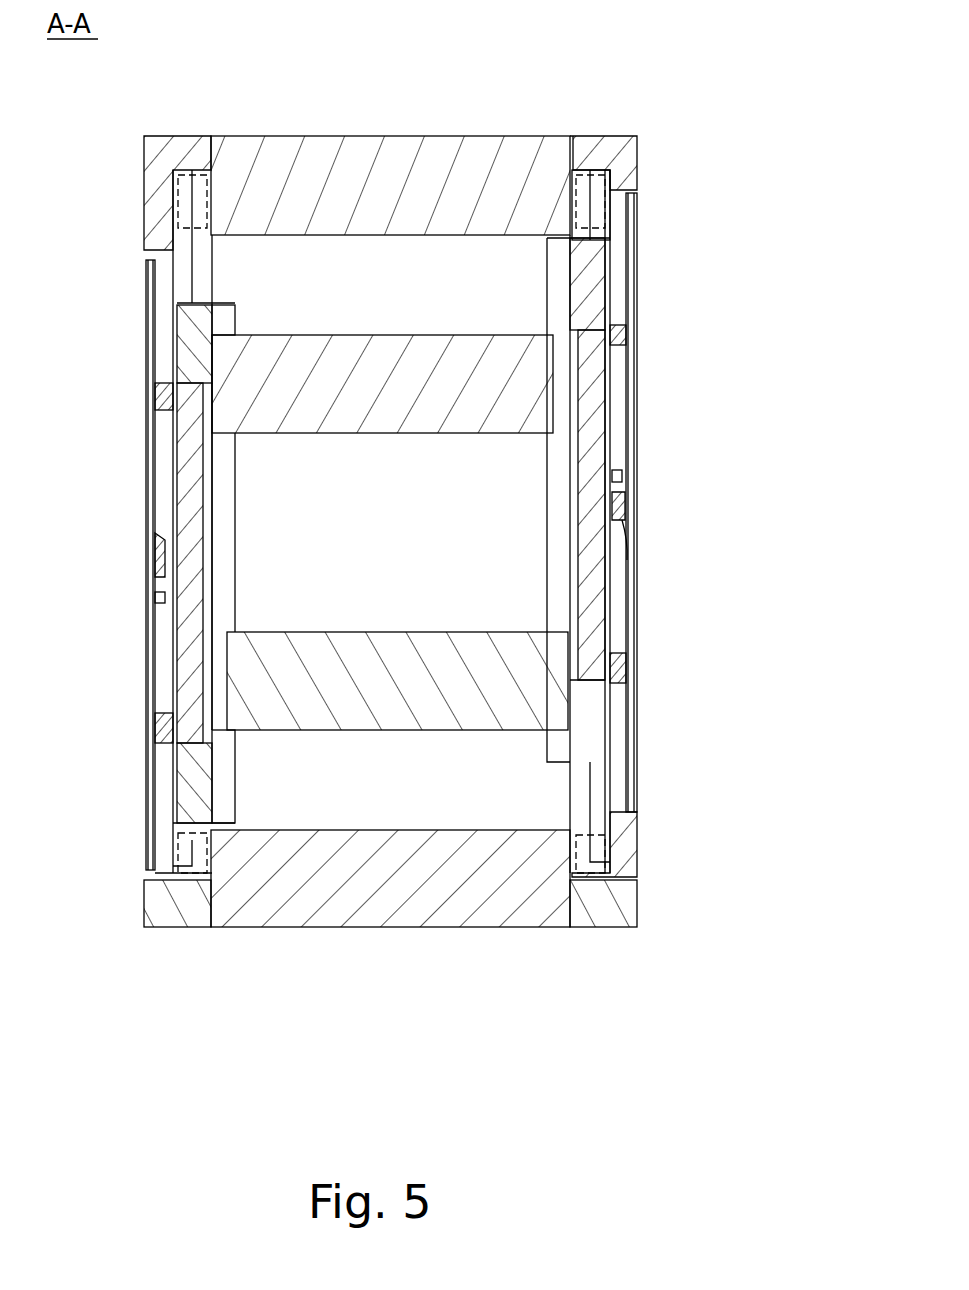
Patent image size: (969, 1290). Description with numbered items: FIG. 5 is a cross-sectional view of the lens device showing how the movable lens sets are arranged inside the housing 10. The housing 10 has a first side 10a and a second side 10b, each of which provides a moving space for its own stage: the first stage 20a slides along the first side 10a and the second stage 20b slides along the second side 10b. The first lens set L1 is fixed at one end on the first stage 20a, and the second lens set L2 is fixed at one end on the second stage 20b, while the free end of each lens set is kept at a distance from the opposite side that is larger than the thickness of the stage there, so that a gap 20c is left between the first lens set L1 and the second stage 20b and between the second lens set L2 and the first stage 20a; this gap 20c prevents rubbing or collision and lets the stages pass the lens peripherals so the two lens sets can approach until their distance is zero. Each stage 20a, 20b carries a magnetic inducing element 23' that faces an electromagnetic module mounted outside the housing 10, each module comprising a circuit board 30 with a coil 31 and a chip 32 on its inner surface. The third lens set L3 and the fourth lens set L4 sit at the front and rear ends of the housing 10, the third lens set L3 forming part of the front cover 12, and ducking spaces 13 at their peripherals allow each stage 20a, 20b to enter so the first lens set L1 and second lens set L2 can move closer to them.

The housing 10 is at (625, 138).
The front cover 12 is at (622, 928).
The ducking space 13 is at (178, 185).
The first side 10a is at (597, 793).
The second side 10b is at (185, 275).
The first stage 20a is at (585, 278).
The second stage 20b is at (195, 780).
The gap 20c is at (568, 385).
The magnetic inducing element 23' is at (394, 536).
The circuit board 30 is at (152, 428).
The coil 31 is at (160, 392).
The chip 32 is at (160, 545).
The first lens set L1 is at (560, 708).
The second lens set L2 is at (222, 356).
The third lens set L3 is at (390, 920).
The fourth lens set L4 is at (390, 152).